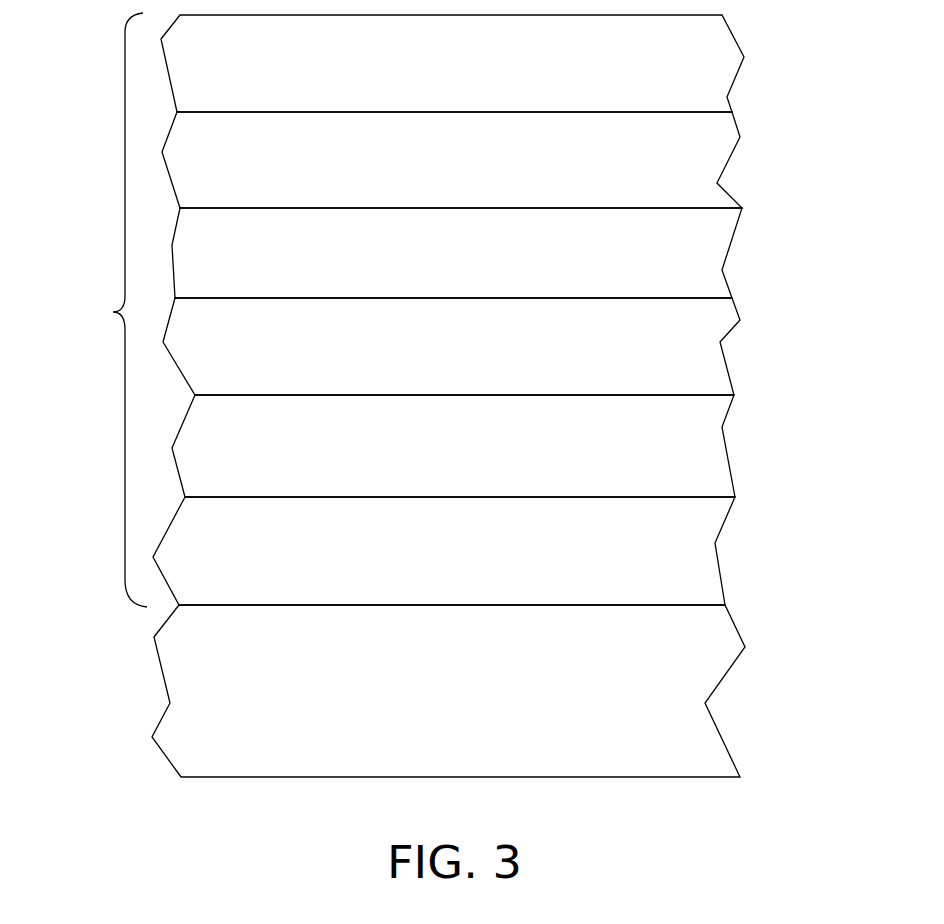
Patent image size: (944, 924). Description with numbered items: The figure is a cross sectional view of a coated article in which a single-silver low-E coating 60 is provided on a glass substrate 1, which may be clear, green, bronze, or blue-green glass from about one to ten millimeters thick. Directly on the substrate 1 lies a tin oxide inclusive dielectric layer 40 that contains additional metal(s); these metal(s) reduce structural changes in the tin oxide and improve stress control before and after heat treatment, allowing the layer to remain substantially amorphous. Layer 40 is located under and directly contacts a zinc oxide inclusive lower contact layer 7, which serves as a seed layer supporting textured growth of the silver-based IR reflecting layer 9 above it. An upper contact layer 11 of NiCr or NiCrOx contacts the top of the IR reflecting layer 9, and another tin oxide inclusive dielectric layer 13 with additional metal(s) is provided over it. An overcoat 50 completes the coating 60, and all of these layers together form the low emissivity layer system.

The substrate 1 is at (685, 695).
The first lower contact layer 7 is at (698, 455).
The first infrared (IR) reflecting layer 9 is at (700, 357).
The first upper contact layer 11 is at (698, 257).
The tin oxide inclusive dielectric layer 13 is at (700, 165).
The tin oxide inclusive dielectric layer 40 is at (695, 557).
The overcoat 50 is at (713, 70).
The low-E coating 60 is at (111, 312).